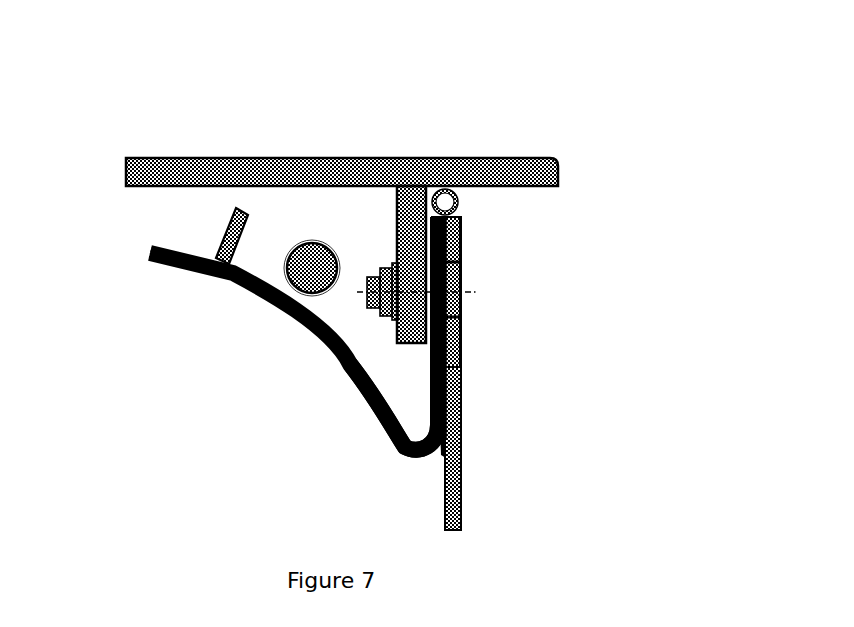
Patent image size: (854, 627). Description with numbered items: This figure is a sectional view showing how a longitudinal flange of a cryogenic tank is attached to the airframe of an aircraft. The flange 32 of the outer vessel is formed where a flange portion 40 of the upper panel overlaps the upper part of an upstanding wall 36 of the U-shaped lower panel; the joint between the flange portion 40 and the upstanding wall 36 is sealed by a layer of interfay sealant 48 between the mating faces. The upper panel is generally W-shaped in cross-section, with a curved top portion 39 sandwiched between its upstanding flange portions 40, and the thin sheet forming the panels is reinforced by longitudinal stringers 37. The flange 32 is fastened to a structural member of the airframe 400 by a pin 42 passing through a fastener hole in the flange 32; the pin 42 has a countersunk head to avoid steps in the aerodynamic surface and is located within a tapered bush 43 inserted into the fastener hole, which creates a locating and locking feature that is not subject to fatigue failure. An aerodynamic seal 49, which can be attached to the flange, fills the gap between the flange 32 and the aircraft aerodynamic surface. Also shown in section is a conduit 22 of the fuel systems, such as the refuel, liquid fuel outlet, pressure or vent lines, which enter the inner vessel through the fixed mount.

The conduits 22 is at (307, 240).
The structural member of the airframe 400 is at (393, 222).
The longitudinal stringers 37 is at (227, 235).
The curved top portion 39 is at (278, 313).
The flange portions 40 is at (437, 355).
The aerodynamic seal 49 is at (460, 203).
The pins 42 is at (458, 287).
The tapered bushes 43 is at (462, 317).
The interfay sealant 48 is at (463, 358).
The longitudinal flanges 32 is at (473, 383).
The upstanding opposing walls 36 is at (463, 462).